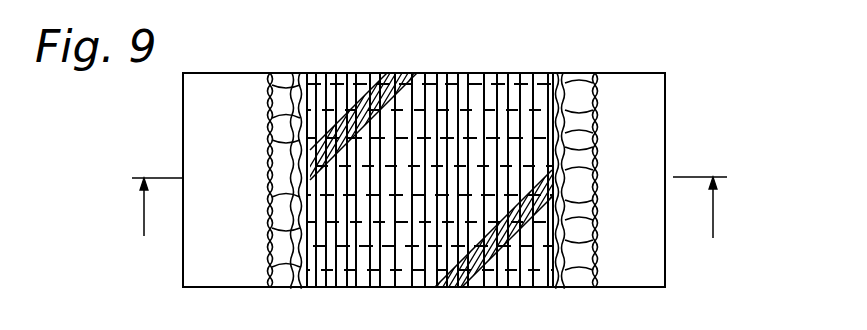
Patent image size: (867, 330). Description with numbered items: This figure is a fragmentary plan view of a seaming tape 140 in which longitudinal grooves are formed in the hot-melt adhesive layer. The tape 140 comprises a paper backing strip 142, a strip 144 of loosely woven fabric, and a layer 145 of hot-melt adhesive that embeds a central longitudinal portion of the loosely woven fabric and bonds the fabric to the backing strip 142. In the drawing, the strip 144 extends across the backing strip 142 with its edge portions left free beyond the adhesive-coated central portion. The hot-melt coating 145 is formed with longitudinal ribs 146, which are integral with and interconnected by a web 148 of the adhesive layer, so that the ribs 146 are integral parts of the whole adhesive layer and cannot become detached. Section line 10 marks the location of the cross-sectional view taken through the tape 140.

The section line 10 is at (424, 219).
The seaming tape 140 is at (668, 276).
The paper backing strip 142 is at (658, 132).
The strip of loosely woven fabric 144 is at (570, 140).
The layer of hot-melt adhesive 145 is at (372, 80).
The longitudinal ribs 146 is at (488, 42).
The web 148 is at (535, 80).